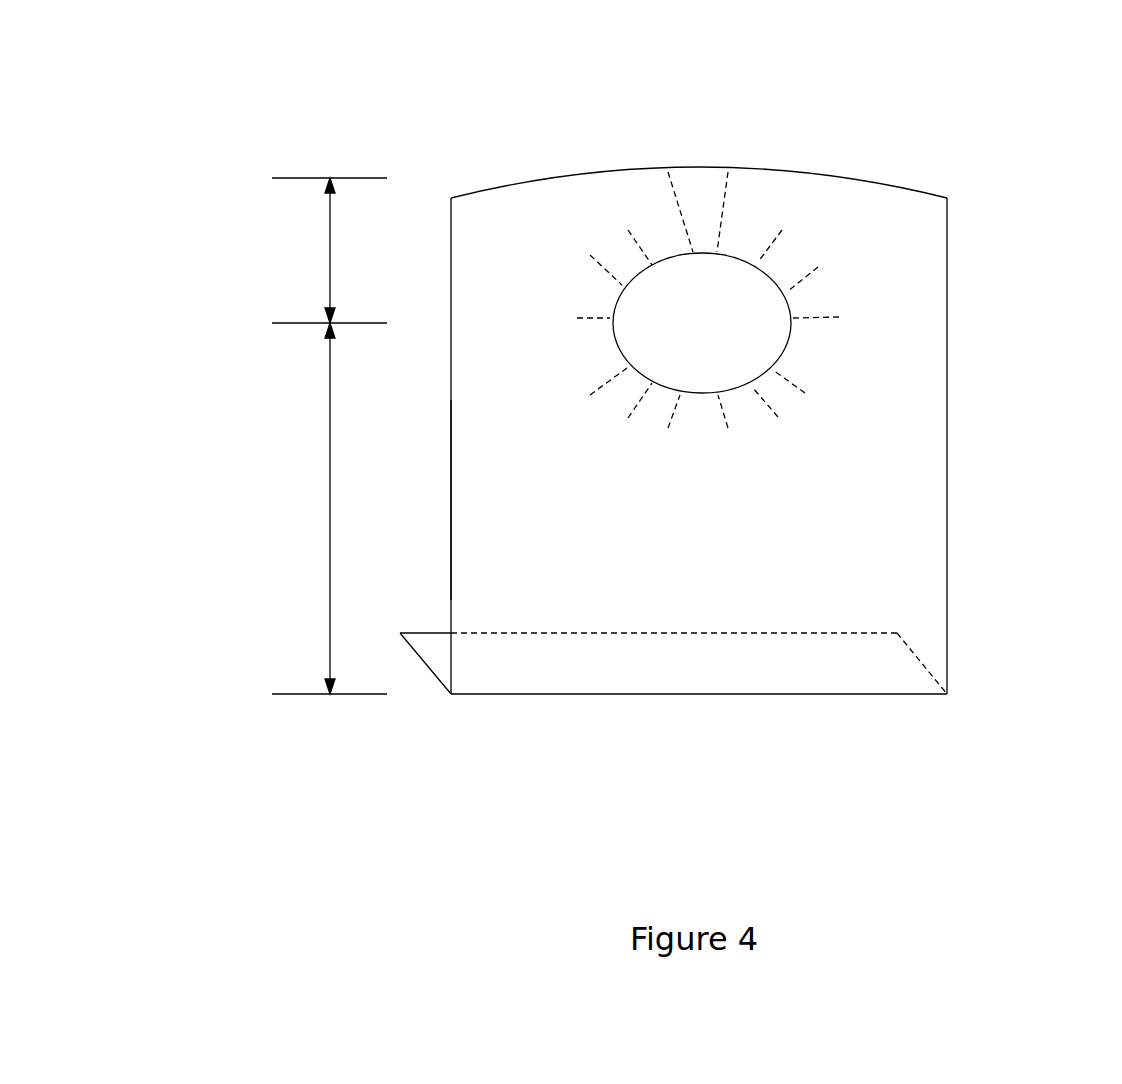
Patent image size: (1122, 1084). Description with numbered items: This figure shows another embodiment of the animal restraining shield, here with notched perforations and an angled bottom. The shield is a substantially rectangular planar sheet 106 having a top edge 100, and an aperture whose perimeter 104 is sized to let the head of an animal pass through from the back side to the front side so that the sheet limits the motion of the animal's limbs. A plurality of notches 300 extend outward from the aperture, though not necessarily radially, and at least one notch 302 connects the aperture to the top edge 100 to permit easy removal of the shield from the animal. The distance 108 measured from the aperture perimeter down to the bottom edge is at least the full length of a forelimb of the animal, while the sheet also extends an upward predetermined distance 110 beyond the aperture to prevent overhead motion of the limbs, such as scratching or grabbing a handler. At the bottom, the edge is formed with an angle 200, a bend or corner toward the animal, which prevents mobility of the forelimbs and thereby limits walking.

The top edge 100 is at (705, 167).
The aperture perimeter 104 is at (793, 324).
The planar sheet 106 is at (768, 493).
The distance from circumference to bottom edge 108 is at (335, 582).
The upward predetermined distance 110 is at (330, 282).
The angle 200 is at (885, 657).
The notches 300 is at (807, 389).
The notch connected to an edge 302 is at (665, 167).